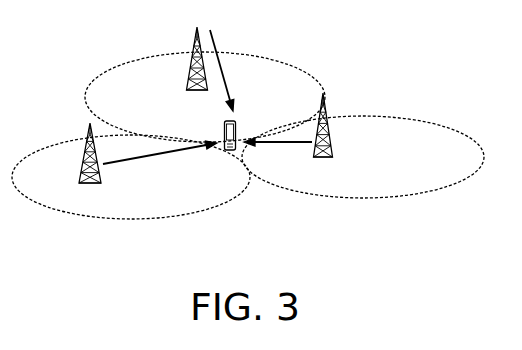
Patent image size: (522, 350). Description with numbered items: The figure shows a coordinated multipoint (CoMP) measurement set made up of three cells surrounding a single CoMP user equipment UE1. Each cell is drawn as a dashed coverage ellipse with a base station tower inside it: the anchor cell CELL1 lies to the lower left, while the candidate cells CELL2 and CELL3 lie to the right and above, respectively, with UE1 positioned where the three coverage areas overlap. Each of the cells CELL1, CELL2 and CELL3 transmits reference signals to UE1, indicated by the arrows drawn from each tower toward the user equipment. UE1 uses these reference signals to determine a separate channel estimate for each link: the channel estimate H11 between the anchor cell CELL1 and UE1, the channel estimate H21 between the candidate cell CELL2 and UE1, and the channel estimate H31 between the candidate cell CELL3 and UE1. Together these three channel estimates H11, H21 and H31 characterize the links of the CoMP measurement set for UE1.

The channel estimate H11 is at (214, 141).
The channel estimate H21 is at (320, 101).
The channel estimate H31 is at (242, 70).
The CoMP UE UE1 is at (261, 147).
The anchor cell CELL1 is at (131, 171).
The candidate cell CELL2 is at (363, 145).
The candidate cell CELL3 is at (205, 84).